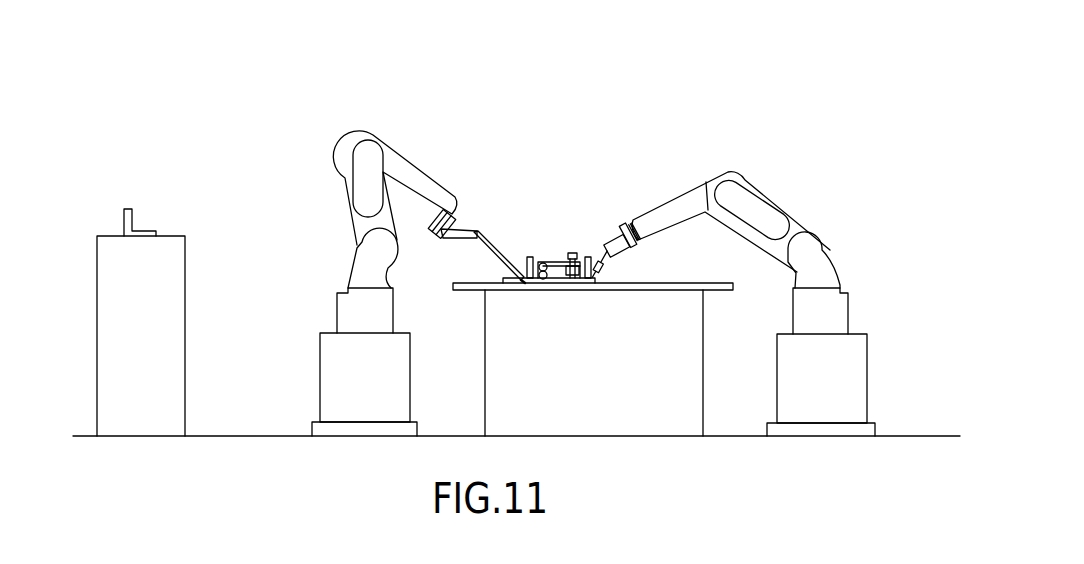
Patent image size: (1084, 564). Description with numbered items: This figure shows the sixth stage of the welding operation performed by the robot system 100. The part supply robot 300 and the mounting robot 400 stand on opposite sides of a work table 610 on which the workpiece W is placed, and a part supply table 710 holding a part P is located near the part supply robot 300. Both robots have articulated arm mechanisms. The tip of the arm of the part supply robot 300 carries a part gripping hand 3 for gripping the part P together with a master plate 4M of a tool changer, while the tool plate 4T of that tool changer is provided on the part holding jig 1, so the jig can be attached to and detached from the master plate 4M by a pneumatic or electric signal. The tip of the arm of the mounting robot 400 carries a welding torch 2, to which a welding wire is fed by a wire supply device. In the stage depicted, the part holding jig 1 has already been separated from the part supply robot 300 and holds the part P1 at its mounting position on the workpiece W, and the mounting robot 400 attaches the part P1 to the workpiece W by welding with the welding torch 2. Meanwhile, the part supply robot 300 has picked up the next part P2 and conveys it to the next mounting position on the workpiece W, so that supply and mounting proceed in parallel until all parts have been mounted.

The robot system 100 is at (515, 98).
The part supply table 710 is at (101, 235).
The part P is at (126, 204).
The part supply robot 300 is at (322, 246).
The master plate 4M is at (441, 241).
The part gripping hand 3 is at (474, 226).
The work table 610 is at (703, 360).
The workpiece W is at (690, 283).
The next part P2 is at (528, 257).
The part held by part holding jig P1 is at (588, 257).
The tool plate 4T is at (555, 258).
The part holding jig 1 is at (571, 236).
The mounting robot 400 is at (846, 210).
The welding torch 2 is at (617, 221).